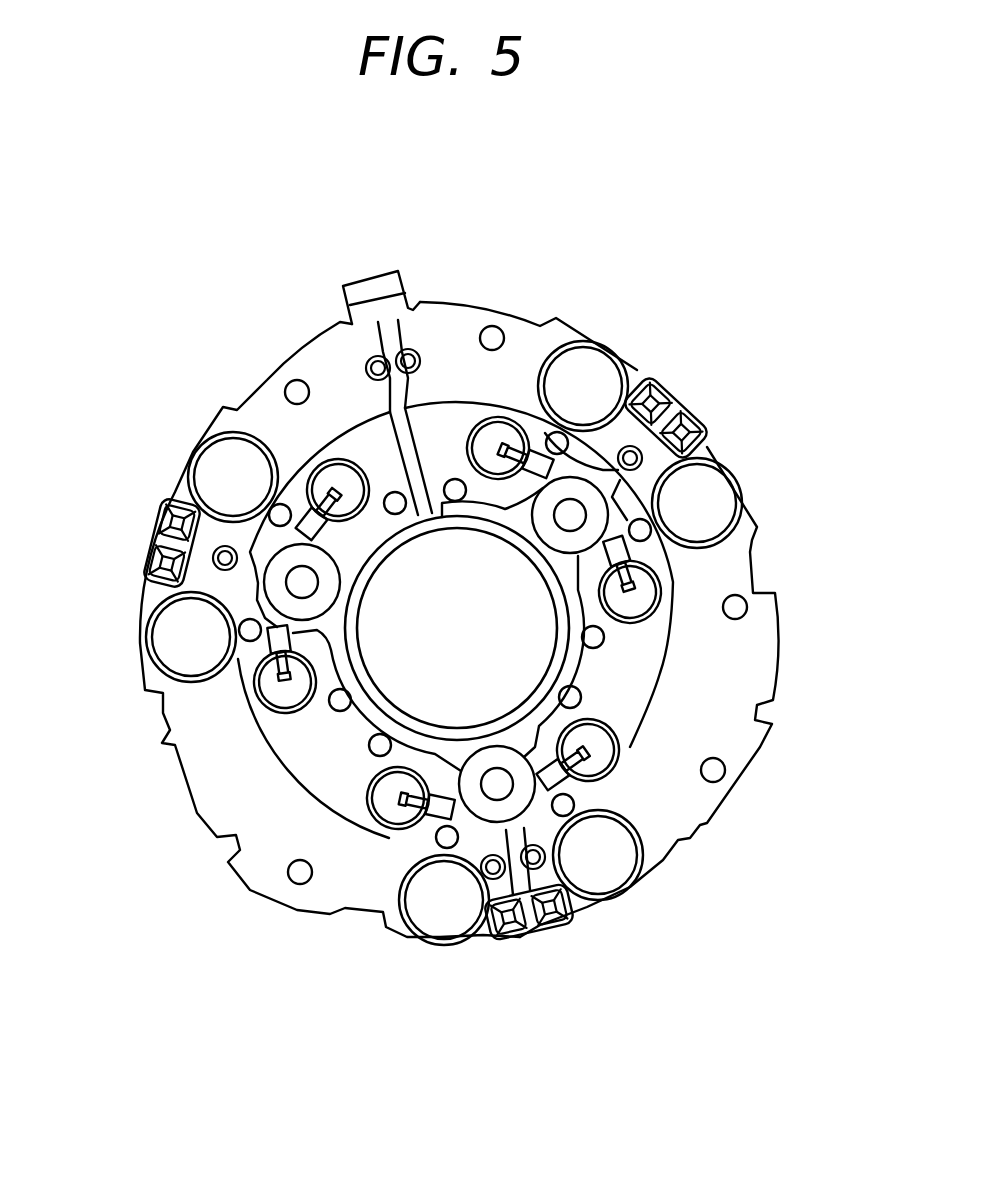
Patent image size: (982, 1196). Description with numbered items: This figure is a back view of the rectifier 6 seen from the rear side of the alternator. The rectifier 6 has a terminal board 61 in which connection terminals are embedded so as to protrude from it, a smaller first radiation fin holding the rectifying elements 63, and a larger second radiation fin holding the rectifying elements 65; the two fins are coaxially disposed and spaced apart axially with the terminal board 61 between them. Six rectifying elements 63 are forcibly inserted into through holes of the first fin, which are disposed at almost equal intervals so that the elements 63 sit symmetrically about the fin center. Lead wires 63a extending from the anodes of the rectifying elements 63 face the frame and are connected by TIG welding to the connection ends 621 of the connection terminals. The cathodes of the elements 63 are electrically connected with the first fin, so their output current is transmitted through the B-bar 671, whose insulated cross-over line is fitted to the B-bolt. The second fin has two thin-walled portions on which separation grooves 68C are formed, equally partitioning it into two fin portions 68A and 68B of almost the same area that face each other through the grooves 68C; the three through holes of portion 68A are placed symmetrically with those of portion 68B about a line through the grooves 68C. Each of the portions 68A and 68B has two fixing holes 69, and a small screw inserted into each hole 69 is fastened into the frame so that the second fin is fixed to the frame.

The rectifier 6 is at (619, 250).
The terminal board 61 is at (258, 543).
The connection end 621 is at (635, 768).
The rectifying element 63 is at (499, 440).
The lead wire 63a is at (530, 458).
The rectifying element 65 is at (598, 375).
The B-bar 671 is at (360, 281).
The fin portion 68A is at (230, 807).
The fin portion 68B is at (703, 802).
The separation groove 68C is at (373, 278).
The fixing hole 69 is at (295, 388).